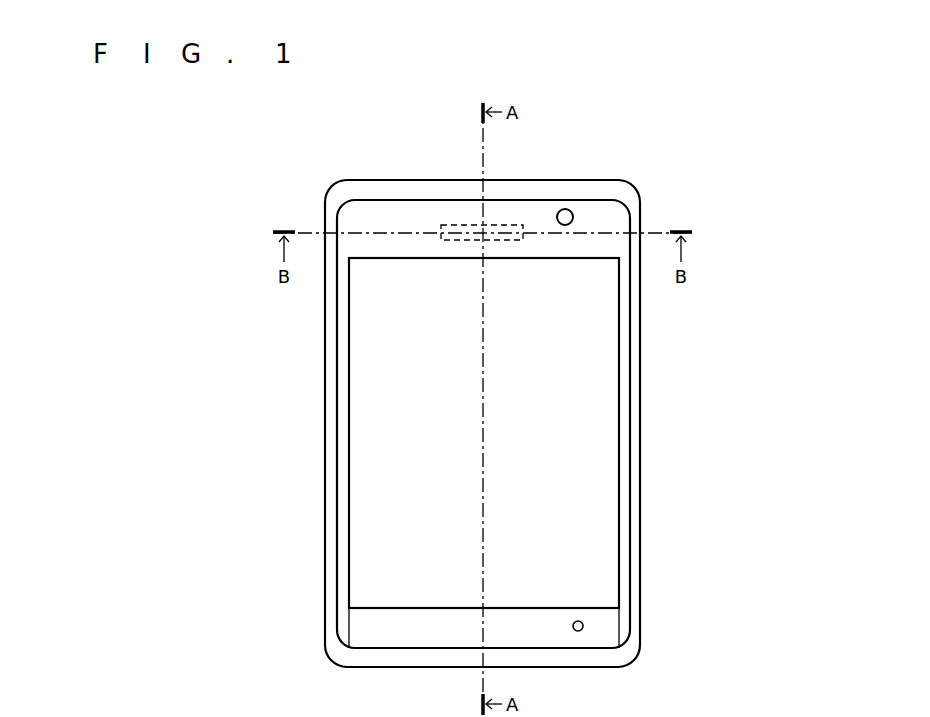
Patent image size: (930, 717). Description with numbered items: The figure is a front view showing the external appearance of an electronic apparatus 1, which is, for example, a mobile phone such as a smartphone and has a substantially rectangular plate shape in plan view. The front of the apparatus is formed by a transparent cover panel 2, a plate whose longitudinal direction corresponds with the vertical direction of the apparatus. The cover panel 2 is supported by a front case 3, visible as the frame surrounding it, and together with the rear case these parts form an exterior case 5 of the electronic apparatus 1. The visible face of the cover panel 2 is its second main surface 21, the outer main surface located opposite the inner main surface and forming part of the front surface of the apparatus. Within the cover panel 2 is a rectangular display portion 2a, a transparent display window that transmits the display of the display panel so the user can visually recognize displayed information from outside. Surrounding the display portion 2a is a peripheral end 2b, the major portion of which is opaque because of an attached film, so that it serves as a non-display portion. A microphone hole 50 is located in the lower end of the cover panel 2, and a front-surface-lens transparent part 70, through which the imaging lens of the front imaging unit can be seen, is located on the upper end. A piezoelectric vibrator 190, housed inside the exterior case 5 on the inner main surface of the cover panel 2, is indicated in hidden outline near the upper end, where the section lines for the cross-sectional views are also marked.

The electronic apparatus 1 is at (535, 160).
The cover panel 2 is at (603, 314).
The second main surface 21 is at (600, 402).
The display portion 2a is at (575, 518).
The peripheral end 2b is at (615, 627).
The front case 3 is at (622, 653).
The exterior case 5 is at (650, 188).
The microphone hole 50 is at (578, 631).
The front-surface-lens transparent part 70 is at (567, 209).
The piezoelectric vibrator 190 is at (455, 222).